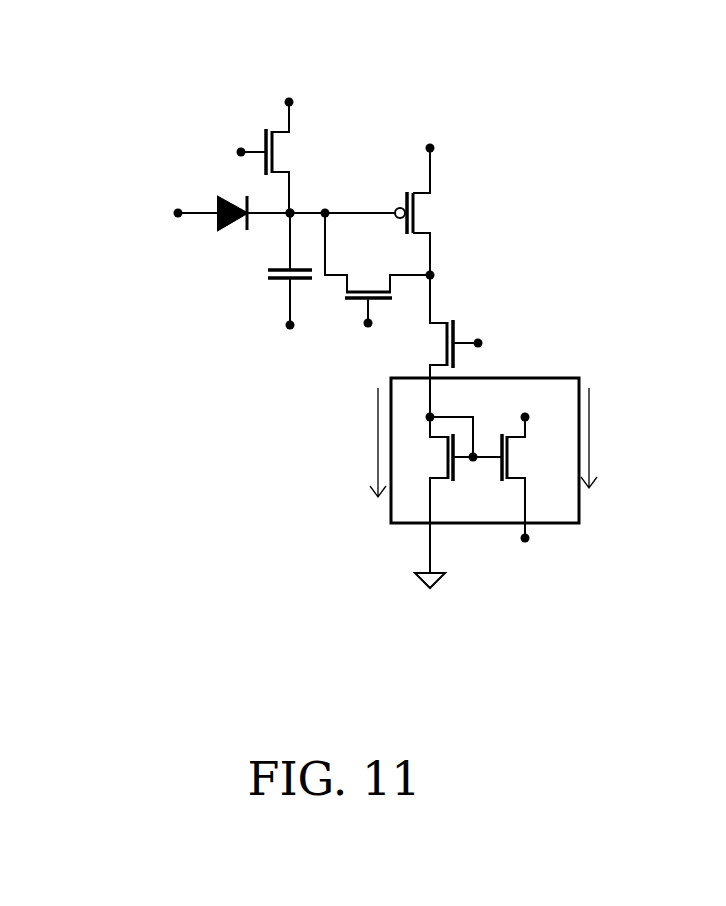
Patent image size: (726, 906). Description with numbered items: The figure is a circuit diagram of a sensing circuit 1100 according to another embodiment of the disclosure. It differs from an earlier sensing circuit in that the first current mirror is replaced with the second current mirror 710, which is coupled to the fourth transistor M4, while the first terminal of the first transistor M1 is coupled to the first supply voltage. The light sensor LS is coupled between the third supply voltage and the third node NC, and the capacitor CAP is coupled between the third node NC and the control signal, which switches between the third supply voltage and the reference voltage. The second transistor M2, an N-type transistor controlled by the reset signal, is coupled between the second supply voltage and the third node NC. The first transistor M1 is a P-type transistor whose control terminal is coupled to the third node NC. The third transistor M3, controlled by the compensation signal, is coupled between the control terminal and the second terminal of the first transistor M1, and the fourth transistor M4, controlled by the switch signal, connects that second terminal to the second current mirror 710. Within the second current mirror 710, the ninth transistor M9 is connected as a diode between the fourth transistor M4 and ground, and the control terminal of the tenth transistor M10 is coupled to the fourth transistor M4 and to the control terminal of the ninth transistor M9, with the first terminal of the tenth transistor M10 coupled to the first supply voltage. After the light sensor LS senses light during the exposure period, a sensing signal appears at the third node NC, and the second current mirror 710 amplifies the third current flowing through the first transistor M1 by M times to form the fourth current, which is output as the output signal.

The sensing circuit 1100 is at (373, 385).
The second current mirror 710 is at (480, 408).
The first transistor M1 is at (423, 213).
The second transistor M2 is at (283, 152).
The third transistor M3 is at (368, 282).
The fourth transistor M4 is at (437, 338).
The ninth transistor M9 is at (438, 460).
The tenth transistor M10 is at (517, 460).
The light sensor LS is at (241, 194).
The third node NC is at (285, 219).
The capacitor CAP is at (266, 275).